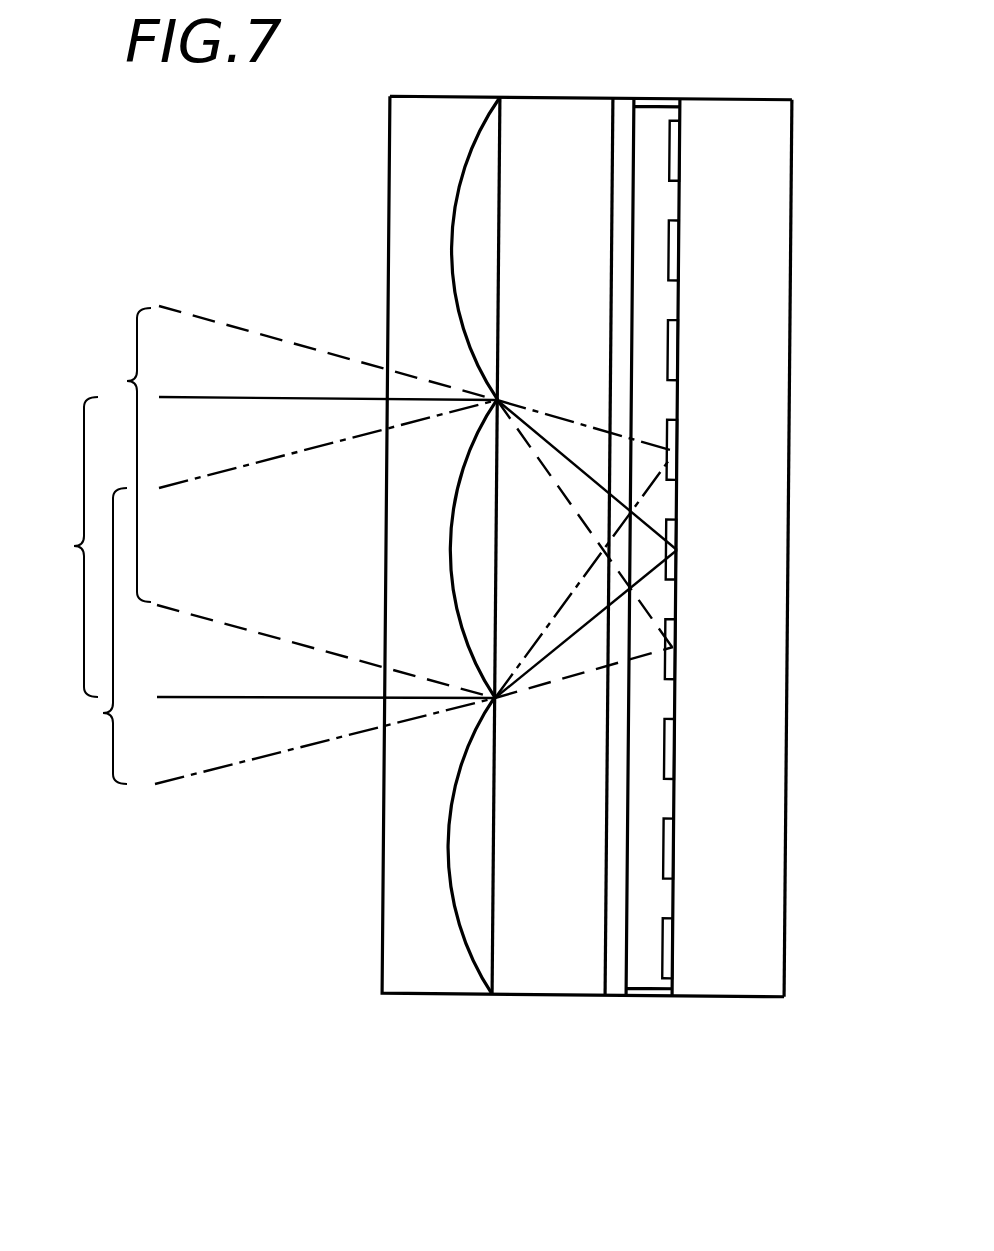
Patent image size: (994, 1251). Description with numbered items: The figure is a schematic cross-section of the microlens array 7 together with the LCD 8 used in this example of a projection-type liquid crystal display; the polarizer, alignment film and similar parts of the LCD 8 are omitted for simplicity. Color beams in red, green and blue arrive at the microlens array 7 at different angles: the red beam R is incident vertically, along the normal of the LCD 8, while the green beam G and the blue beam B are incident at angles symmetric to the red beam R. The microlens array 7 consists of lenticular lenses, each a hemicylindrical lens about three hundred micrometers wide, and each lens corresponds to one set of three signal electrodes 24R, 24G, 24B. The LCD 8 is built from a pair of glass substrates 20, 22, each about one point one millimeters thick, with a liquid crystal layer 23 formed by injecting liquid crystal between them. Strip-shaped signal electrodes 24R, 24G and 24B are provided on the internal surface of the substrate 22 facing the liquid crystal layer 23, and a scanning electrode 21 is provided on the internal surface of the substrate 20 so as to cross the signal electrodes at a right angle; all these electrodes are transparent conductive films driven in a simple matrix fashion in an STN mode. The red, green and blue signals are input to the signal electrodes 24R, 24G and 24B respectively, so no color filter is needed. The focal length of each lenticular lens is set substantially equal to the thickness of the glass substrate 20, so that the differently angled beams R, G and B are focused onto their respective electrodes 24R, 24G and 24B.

The microlens array 7 is at (437, 122).
The LCD 8 is at (793, 84).
The glass substrate 20 is at (553, 983).
The scanning electrode 21 is at (617, 985).
The glass substrate 22 is at (728, 988).
The liquid crystal layer 23 is at (645, 975).
The signal electrode 24G is at (684, 450).
The signal electrode 24R is at (685, 551).
The signal electrode 24B is at (683, 648).
The blue beam B is at (127, 381).
The red beam R is at (69, 547).
The green beam G is at (103, 713).